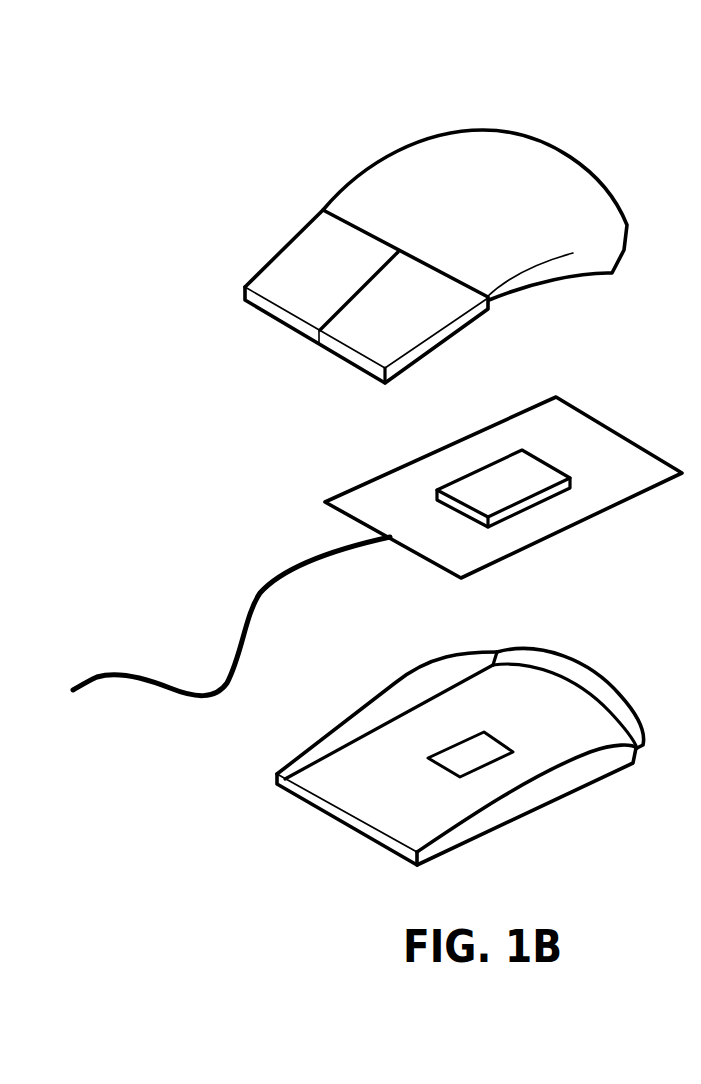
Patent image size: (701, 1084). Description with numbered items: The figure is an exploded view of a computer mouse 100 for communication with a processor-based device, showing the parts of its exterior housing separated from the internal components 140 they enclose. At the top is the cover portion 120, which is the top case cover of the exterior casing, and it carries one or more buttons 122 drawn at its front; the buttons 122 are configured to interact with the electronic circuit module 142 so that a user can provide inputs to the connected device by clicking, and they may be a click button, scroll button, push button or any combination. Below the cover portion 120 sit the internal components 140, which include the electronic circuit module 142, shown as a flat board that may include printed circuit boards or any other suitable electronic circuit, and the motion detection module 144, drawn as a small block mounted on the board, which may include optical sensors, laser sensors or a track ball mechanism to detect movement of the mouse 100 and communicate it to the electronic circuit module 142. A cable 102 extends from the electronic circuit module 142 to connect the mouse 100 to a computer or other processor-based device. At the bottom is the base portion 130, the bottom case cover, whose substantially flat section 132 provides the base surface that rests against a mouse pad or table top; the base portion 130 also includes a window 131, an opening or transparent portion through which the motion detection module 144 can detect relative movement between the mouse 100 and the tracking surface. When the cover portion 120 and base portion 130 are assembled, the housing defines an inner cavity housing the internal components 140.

The computer mouse 100 is at (615, 104).
The cable 102 is at (137, 678).
The cover portion 120 is at (420, 192).
The buttons 122 is at (323, 251).
The base portion 130 is at (451, 736).
The window 131 is at (440, 770).
The substantially flat section 132 is at (547, 703).
The internal components 140 is at (442, 468).
The electronic circuit module 142 is at (598, 438).
The motion detection module 144 is at (493, 483).